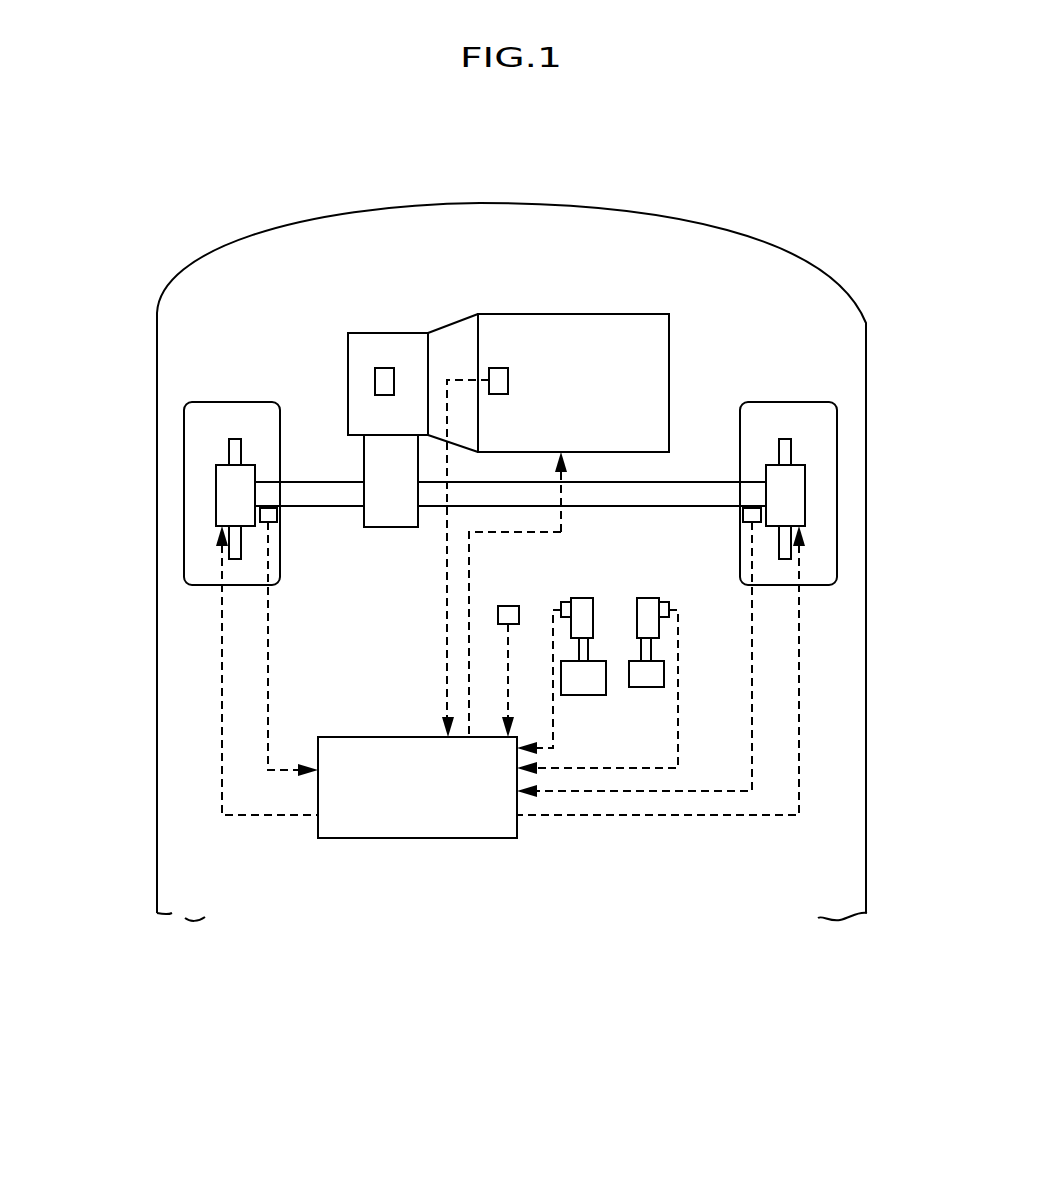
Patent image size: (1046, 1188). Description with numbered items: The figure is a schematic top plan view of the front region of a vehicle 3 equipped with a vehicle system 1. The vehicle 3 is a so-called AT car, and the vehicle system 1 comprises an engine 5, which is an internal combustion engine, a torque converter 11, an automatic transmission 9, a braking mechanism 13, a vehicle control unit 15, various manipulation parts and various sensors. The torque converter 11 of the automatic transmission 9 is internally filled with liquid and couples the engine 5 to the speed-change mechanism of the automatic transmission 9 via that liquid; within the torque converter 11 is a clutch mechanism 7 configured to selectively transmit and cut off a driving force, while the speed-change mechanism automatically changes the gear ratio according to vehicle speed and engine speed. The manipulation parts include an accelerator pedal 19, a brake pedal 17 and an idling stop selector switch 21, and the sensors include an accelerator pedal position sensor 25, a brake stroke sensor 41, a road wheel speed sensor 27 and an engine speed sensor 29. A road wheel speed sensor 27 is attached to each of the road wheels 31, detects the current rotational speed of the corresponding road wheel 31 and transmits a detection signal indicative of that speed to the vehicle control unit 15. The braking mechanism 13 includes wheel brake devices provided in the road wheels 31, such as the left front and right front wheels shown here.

The vehicle system 1 is at (475, 857).
The vehicle 3 is at (128, 757).
The engine 5 is at (611, 314).
The clutch mechanism 7 is at (386, 367).
The automatic transmission 9 is at (410, 333).
The torque converter 11 is at (460, 320).
The braking mechanism 13 is at (216, 497).
The vehicle control unit 15 is at (401, 830).
The brake pedal 17 is at (583, 683).
The accelerator pedal 19 is at (647, 680).
The idling stop selector switch 21 is at (508, 606).
The accelerator pedal position sensor 25 is at (665, 602).
The road wheel speed sensor 27 is at (274, 522).
The engine speed sensor 29 is at (498, 368).
The road wheel 31 is at (184, 558).
The brake stroke sensor 41 is at (563, 602).